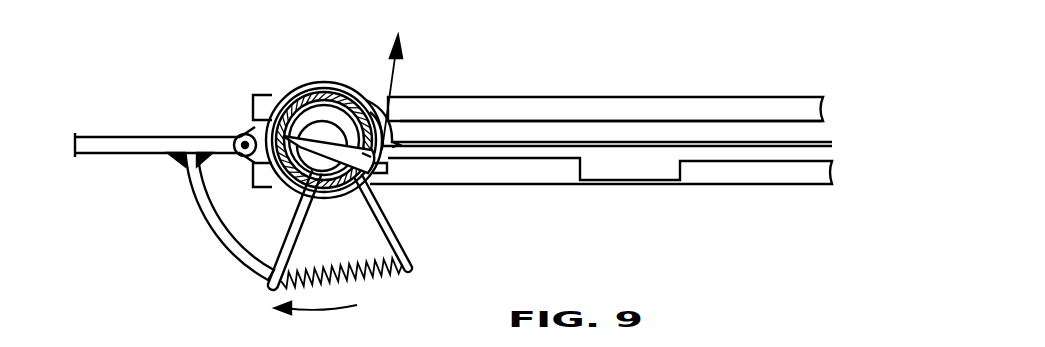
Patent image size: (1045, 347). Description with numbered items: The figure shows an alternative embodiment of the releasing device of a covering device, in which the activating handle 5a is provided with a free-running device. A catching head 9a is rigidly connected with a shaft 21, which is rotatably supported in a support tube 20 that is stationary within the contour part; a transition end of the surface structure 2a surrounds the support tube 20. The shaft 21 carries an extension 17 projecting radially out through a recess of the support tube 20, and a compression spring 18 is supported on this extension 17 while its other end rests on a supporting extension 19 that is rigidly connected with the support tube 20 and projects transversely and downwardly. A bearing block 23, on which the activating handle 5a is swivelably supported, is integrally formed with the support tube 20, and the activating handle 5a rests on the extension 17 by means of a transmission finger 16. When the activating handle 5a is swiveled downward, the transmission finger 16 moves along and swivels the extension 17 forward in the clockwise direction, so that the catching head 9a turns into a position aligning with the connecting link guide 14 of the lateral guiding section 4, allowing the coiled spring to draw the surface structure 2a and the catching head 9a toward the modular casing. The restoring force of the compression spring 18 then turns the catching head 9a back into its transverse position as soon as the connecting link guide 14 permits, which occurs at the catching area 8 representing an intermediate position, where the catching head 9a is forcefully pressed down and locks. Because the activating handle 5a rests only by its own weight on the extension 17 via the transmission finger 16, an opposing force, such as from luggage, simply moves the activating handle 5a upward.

The surface structure 2a is at (350, 80).
The guiding section 4 is at (598, 108).
The activating handle 5a is at (107, 145).
The catching area 8 is at (627, 166).
The catching head 9a is at (378, 160).
The connecting link guide 14 is at (688, 128).
The transmission finger 16 is at (220, 237).
The extension 17 is at (292, 235).
The compression spring 18 is at (375, 270).
The supporting extension 19 is at (398, 228).
The support tube 20 is at (300, 95).
The shaft 21 is at (322, 110).
The bearing block 23 is at (241, 134).